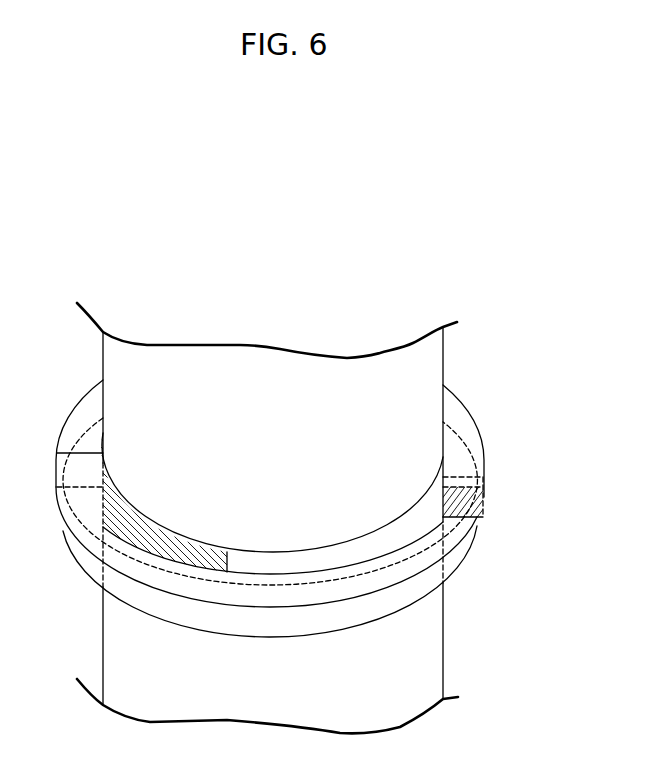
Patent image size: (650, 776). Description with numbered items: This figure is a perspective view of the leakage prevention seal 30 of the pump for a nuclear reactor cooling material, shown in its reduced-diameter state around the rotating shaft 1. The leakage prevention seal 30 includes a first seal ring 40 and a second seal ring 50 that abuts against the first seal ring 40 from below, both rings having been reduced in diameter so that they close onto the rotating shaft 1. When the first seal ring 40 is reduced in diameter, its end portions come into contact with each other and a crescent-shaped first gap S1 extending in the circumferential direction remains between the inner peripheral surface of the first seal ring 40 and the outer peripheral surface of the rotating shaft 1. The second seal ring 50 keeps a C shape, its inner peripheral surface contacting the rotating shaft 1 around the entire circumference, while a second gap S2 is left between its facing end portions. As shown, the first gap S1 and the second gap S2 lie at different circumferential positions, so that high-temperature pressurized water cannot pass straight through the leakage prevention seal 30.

The rotating shaft 1 is at (428, 644).
The leakage prevention seal 30 is at (507, 403).
The first seal ring 40 is at (463, 418).
The second seal ring 50 is at (457, 558).
The first gap S1 is at (66, 538).
The second gap S2 is at (483, 505).